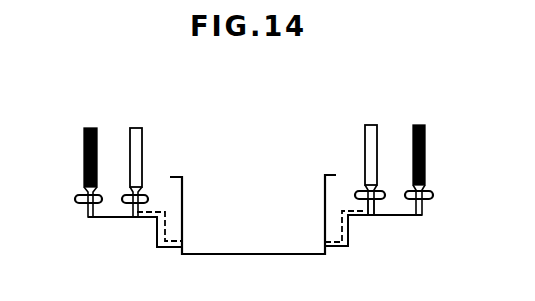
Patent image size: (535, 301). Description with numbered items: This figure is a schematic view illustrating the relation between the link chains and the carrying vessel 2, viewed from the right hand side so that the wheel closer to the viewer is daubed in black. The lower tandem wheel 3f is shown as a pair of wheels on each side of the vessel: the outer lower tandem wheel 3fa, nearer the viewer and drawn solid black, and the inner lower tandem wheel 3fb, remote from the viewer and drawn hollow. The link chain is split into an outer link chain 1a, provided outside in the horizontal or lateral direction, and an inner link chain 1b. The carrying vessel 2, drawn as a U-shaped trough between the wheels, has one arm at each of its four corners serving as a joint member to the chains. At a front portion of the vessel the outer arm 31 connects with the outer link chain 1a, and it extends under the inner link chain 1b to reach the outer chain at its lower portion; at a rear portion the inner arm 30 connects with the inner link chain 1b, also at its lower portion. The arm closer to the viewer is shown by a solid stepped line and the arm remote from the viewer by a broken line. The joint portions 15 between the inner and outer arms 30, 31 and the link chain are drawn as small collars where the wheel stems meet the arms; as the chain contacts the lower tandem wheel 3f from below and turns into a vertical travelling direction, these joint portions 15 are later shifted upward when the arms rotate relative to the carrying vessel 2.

The carrying vessel 2 is at (256, 234).
The lower tandem wheel 3f is at (113, 138).
The outer lower tandem wheel 3fa is at (84, 160).
The inner lower tandem wheel 3fb is at (365, 150).
The joint portion 15 is at (85, 219).
The outer link chain 1a is at (435, 196).
The inner link chain 1b is at (385, 197).
The inner arm 30 is at (157, 225).
The outer arm 31 is at (410, 215).